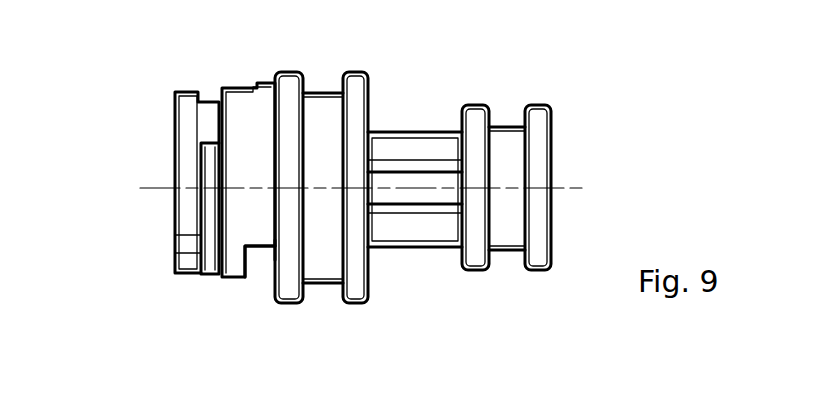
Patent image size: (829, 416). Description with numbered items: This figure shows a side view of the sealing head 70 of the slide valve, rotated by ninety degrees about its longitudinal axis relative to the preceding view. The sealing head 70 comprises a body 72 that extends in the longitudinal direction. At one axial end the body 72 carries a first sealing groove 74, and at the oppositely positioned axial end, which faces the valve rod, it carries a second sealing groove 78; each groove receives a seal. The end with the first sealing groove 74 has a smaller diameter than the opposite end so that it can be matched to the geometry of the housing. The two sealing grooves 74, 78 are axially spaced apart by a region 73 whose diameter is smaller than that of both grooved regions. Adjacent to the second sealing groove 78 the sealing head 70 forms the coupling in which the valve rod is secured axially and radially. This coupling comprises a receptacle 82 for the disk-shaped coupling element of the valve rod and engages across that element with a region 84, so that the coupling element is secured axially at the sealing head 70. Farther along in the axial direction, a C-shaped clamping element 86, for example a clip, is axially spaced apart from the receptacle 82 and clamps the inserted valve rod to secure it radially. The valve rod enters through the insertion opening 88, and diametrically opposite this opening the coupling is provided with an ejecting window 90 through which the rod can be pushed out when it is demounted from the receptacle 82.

The sealing head 70 is at (321, 189).
The body 72 is at (415, 224).
The region 73 is at (423, 140).
The sealing groove 74 is at (507, 255).
The sealing groove 78 is at (317, 285).
The receptacle 82 is at (262, 259).
The region 84 is at (218, 225).
The clamping element 86 is at (177, 237).
The insertion opening 88 is at (277, 253).
The ejecting window 90 is at (238, 97).